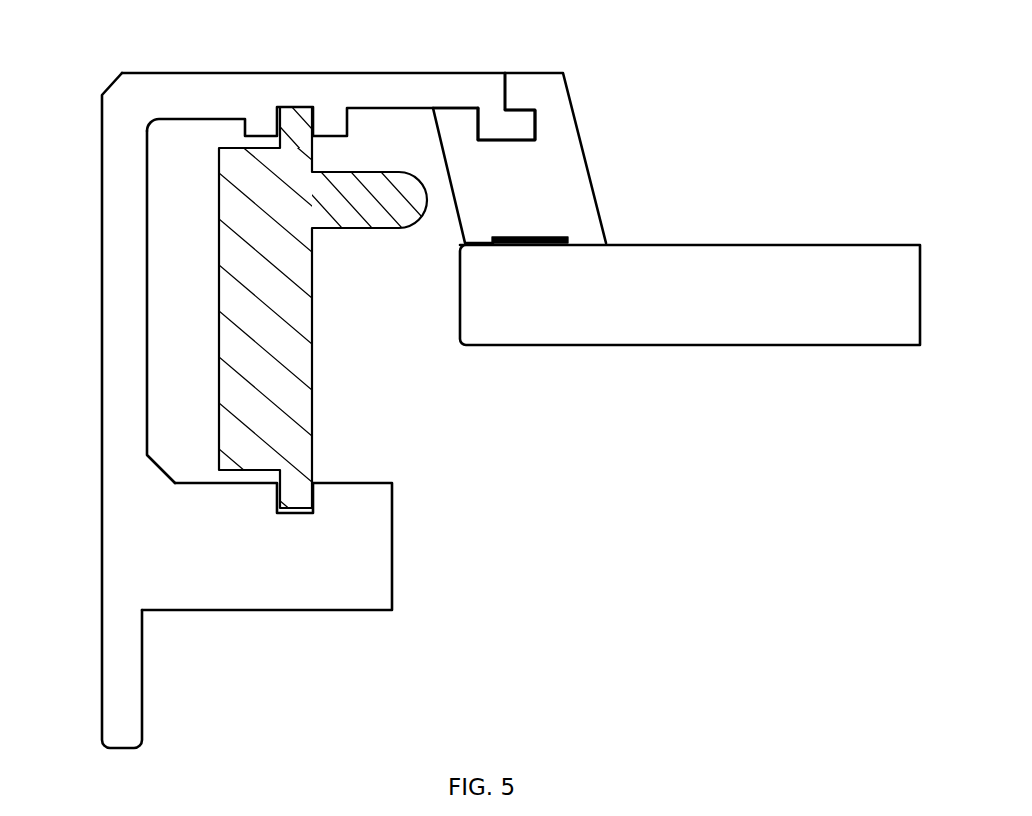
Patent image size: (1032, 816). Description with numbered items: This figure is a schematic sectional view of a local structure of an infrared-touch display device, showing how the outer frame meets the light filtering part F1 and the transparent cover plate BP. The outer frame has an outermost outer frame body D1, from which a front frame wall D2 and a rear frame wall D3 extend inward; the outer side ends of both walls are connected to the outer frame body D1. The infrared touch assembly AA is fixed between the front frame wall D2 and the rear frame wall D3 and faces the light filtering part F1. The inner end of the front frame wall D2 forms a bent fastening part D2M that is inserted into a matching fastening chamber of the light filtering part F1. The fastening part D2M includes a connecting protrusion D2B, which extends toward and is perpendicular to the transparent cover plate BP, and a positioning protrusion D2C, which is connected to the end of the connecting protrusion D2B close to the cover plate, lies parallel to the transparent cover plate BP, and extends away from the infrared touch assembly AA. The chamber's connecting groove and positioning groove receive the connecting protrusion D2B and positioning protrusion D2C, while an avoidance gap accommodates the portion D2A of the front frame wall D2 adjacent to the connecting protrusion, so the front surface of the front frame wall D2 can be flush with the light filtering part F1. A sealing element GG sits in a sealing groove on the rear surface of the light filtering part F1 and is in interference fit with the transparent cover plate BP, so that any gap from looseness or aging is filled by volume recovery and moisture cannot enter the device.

The outer frame body D1 is at (138, 410).
The front frame wall D2 is at (328, 106).
The rear frame wall D3 is at (267, 546).
The portion of the front frame wall close to the connecting protrusion D2A is at (456, 86).
The connecting protrusion D2B is at (494, 103).
The positioning protrusion D2C is at (526, 119).
The fastening part D2M is at (614, 34).
The light filtering part F1 is at (519, 158).
The sealing element GG is at (548, 234).
The transparent cover plate BP is at (690, 295).
The infrared touch assembly AA is at (238, 297).